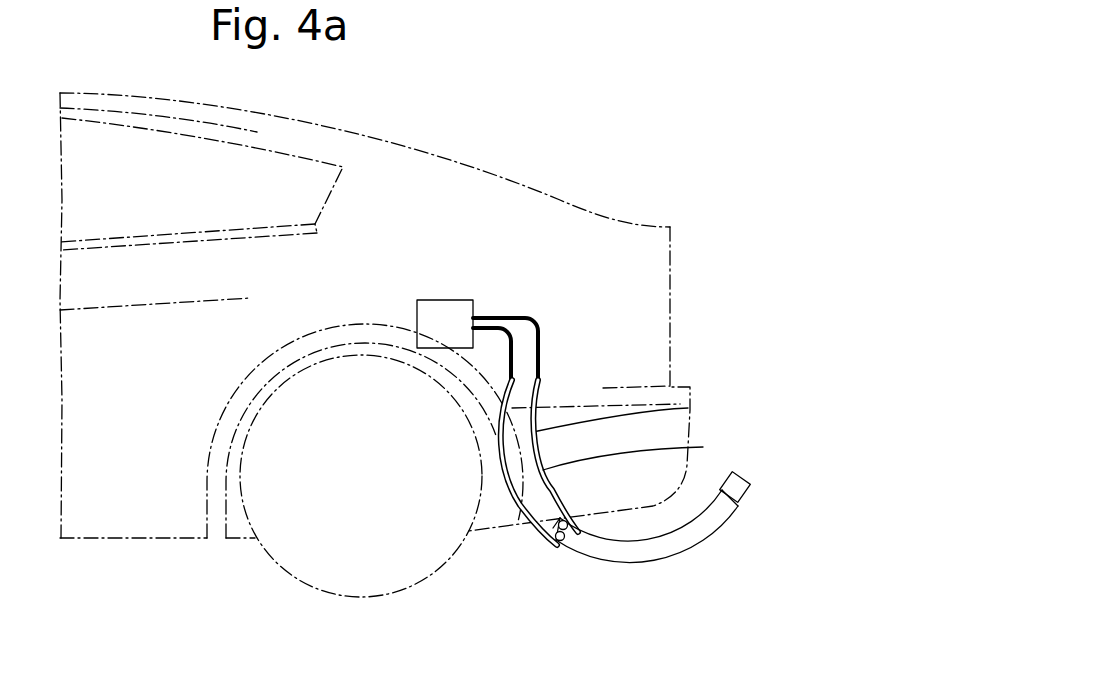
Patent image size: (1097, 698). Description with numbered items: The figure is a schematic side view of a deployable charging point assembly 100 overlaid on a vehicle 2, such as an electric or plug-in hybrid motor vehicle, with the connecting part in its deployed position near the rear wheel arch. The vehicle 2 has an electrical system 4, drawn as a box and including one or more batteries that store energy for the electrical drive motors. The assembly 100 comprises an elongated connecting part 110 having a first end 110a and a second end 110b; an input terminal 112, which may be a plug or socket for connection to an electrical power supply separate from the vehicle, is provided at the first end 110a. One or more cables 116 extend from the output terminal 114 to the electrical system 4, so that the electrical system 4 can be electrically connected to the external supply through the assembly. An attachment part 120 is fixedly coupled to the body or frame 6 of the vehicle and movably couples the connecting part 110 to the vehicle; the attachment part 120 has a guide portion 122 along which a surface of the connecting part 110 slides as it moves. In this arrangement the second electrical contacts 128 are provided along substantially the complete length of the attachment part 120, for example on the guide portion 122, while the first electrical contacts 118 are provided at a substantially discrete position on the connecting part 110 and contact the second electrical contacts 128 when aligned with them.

The vehicle 2 is at (583, 80).
The body or frame 6 is at (560, 200).
The electrical system 4 is at (445, 300).
The deployable charging point assembly 100 is at (530, 600).
The connecting part 110 is at (688, 537).
The first end 110a is at (733, 507).
The second end 110b is at (557, 503).
The input terminal 112 is at (737, 473).
The output terminal 114 is at (518, 373).
The cables 116 is at (497, 313).
The first electrical contacts 118 is at (570, 535).
The attachment part 120 is at (680, 406).
The guide portion 122 is at (492, 467).
The second electrical contacts 128 is at (505, 565).